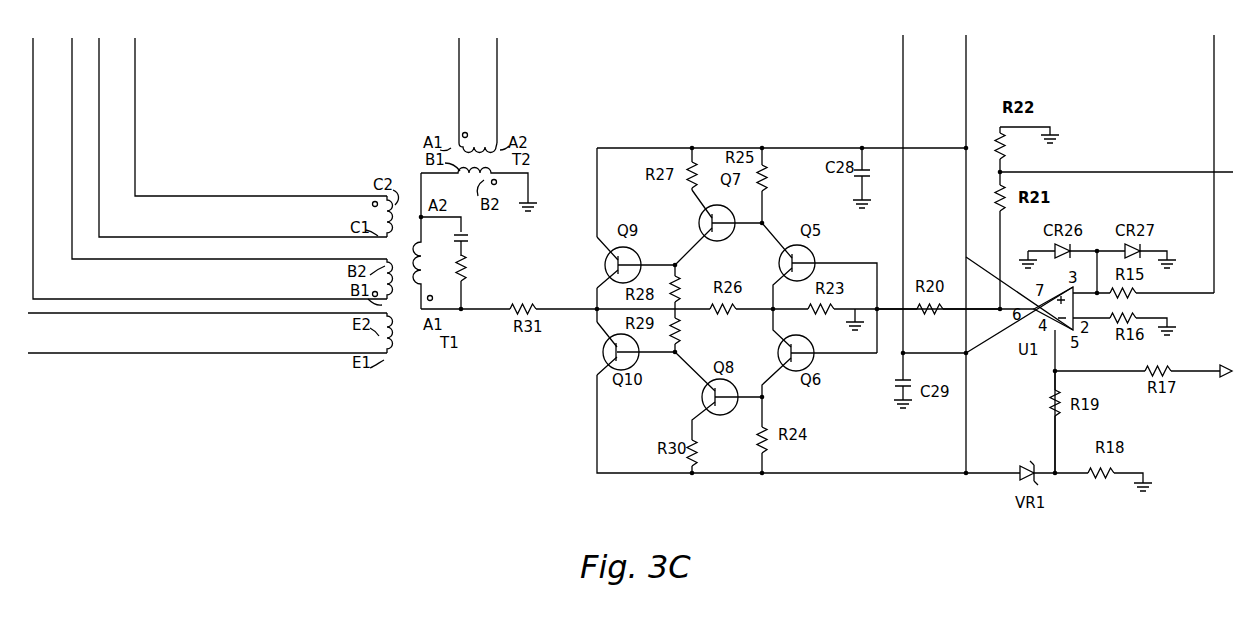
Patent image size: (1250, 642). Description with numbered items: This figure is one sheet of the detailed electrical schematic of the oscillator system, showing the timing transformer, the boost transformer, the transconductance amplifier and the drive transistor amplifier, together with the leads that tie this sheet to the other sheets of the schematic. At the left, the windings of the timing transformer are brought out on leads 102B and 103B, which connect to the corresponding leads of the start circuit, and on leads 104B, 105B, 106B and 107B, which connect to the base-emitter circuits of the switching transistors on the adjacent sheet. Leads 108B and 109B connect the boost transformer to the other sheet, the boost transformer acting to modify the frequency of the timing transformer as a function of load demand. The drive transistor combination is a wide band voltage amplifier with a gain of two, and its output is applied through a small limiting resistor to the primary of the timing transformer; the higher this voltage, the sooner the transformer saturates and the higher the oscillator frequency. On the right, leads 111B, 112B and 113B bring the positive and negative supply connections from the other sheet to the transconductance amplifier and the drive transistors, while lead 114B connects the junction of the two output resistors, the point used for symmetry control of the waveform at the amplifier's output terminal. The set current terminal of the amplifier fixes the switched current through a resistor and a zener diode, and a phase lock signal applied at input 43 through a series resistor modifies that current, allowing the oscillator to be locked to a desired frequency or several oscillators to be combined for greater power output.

The lead 102B is at (178, 313).
The lead 103B is at (258, 353).
The lead 104B is at (33, 48).
The lead 105B is at (72, 68).
The lead 106B is at (99, 93).
The lead 107B is at (135, 118).
The lead 108B is at (458, 68).
The lead 109B is at (540, 47).
The lead 111B is at (903, 62).
The lead 112B is at (966, 62).
The lead 113B is at (1214, 72).
The lead 114B is at (1130, 172).
The input 43 is at (1228, 378).